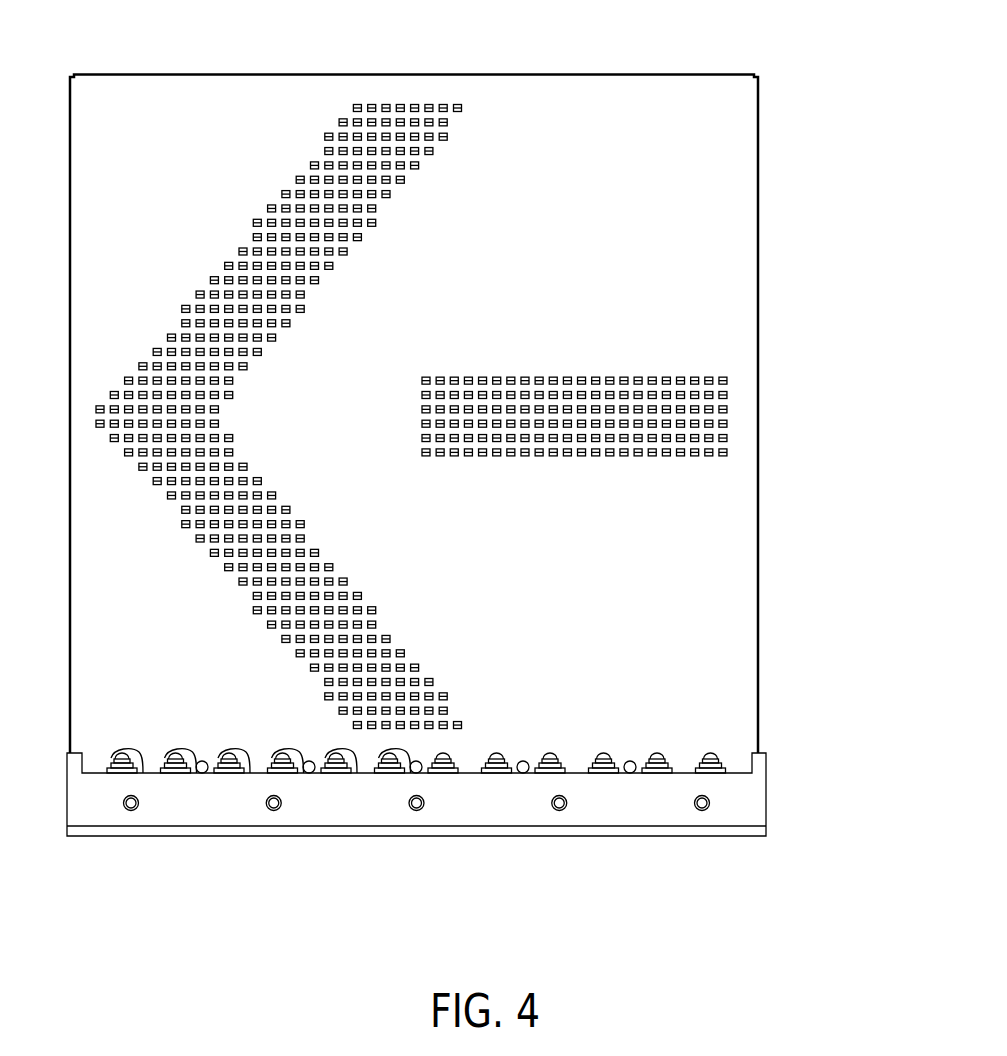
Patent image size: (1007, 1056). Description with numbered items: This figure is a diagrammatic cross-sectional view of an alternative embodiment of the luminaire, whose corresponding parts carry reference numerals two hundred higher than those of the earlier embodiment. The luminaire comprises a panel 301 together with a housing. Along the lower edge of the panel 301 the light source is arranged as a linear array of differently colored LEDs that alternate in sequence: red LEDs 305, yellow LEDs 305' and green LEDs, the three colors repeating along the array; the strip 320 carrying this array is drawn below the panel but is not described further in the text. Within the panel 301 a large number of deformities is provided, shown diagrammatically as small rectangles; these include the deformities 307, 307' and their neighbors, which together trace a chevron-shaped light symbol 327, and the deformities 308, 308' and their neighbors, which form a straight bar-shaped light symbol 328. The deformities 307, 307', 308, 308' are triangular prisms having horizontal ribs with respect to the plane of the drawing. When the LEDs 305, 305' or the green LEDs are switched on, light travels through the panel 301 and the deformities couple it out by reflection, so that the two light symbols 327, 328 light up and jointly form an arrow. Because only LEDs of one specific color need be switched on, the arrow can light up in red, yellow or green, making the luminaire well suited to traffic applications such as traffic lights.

The panel 301 is at (778, 439).
The red LEDs 305 is at (216, 816).
The yellow LEDs 305' is at (272, 816).
The deformity 307 is at (488, 723).
The deformity 307' is at (472, 698).
The deformity 308 is at (397, 469).
The deformity 308' is at (399, 440).
The mounting strip with light sources 320 is at (652, 808).
The light symbol 327 is at (309, 420).
The light symbol 328 is at (542, 368).